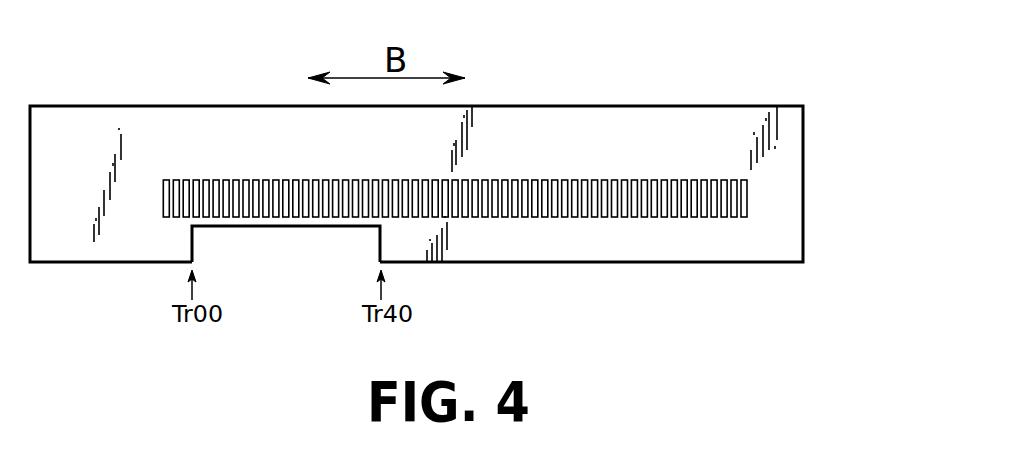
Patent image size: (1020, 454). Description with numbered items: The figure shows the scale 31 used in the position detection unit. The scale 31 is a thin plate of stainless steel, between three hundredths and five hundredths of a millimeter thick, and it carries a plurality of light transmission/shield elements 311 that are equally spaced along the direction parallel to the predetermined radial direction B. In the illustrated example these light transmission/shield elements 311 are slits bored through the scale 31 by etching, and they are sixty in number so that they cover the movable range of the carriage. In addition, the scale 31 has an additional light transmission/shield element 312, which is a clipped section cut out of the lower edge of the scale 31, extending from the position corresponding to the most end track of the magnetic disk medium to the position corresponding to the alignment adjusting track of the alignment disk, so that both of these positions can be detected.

The scale 31 is at (698, 95).
The light transmission/shield elements 311 is at (750, 195).
The additional light transmission/shield element 312 is at (290, 243).